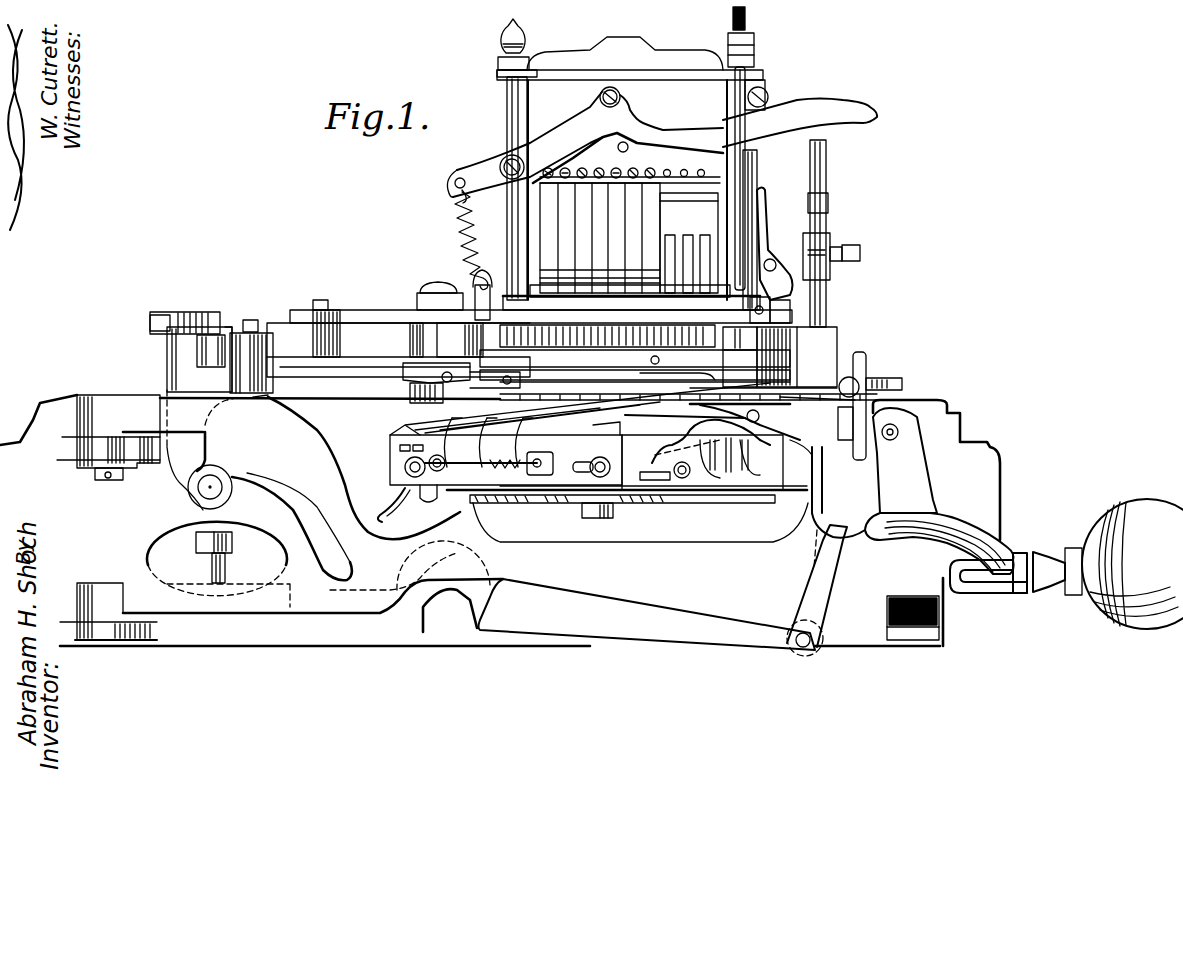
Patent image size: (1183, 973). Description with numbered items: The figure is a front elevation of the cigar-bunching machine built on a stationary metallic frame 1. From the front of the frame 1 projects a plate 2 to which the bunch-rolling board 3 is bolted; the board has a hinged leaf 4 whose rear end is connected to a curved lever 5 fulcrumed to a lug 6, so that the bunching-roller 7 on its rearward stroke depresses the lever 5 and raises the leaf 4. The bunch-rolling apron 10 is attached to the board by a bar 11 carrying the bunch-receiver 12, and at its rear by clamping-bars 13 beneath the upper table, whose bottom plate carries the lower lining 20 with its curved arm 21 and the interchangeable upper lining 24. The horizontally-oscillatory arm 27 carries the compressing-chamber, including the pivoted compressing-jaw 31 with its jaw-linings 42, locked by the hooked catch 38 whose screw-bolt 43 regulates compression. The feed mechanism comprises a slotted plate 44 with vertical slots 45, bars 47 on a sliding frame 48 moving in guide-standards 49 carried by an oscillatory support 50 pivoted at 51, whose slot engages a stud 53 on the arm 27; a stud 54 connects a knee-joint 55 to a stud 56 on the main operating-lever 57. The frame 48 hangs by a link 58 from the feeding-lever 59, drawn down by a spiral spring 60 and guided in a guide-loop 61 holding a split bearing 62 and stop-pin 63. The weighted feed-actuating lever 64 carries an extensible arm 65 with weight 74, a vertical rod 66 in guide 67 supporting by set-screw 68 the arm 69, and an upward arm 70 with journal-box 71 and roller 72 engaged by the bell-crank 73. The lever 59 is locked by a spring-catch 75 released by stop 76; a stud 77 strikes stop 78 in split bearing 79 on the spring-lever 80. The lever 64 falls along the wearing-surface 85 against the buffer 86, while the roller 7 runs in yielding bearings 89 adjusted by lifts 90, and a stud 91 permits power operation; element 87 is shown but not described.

The stationary metallic frame 1 is at (500, 518).
The plate 2 is at (627, 514).
The bunch-rolling board 3 is at (702, 462).
The leaf 4 is at (685, 417).
The curved lever 5 is at (746, 419).
The lug 6 is at (805, 443).
The bunching-roller 7 is at (825, 404).
The bunch-rolling apron 10 is at (580, 425).
The metallic plate or bar 11 is at (560, 476).
The bunch-receiver 12 is at (506, 468).
The clamping-bars 13 is at (446, 340).
The lower lining 20 is at (645, 383).
The curved arm 21 is at (738, 357).
The upper lining 24 is at (635, 373).
The oscillatory arm 27 is at (398, 366).
The compressing-jaw 31 is at (635, 347).
The hooked catch 38 is at (375, 366).
The jaw-linings 42 is at (677, 373).
The screw-bolt 43 is at (403, 383).
The slightly-curved plate 44 is at (689, 243).
The vertical slots 45 is at (685, 244).
The removable vertically-arranged bars 47 is at (600, 238).
The rectangular sliding frame 48 is at (670, 183).
The guide-standards 49 is at (507, 137).
The horizontally-oscillatory support 50 is at (472, 292).
The pivot 51 is at (420, 300).
The stud 53 is at (323, 294).
The stud 54 is at (258, 312).
The knee-joint 55 is at (250, 363).
The stud 56 is at (240, 333).
The main operating-lever 57 is at (277, 418).
The link 58 is at (628, 142).
The feeding-lever 59 is at (628, 151).
The spiral spring 60 is at (465, 222).
The guide-loop 61 is at (800, 123).
The adjustable split bearing 62 is at (768, 97).
The stop-pin 63 is at (746, 17).
The feed-actuating lever 64 is at (647, 614).
The longitudinally-extensible arm 65 is at (1005, 594).
The vertical rod 66 is at (845, 583).
The guide 67 is at (763, 357).
The set-screw 68 is at (841, 256).
The forward-projecting arm 69 is at (828, 205).
The upward-extending arm 70 is at (167, 370).
The journal-box 71 is at (167, 353).
The anti-friction roller 72 is at (232, 328).
The bell-crank 73 is at (529, 333).
The weight 74 is at (1108, 564).
The spring-catch 75 is at (768, 197).
The adjustable stop 76 is at (790, 310).
The stud 77 is at (869, 397).
The adjustable stop 78 is at (848, 377).
The adjustable split bearing 79 is at (878, 380).
The spring-lever 80 is at (890, 388).
The wearing-surface 85 is at (905, 460).
The elastic-faced stop or buffer 86 is at (945, 620).
The bolt 87 is at (190, 318).
The yielding bearings 89 is at (845, 413).
The adjustable lifts 90 is at (378, 497).
The stud 91 is at (212, 567).